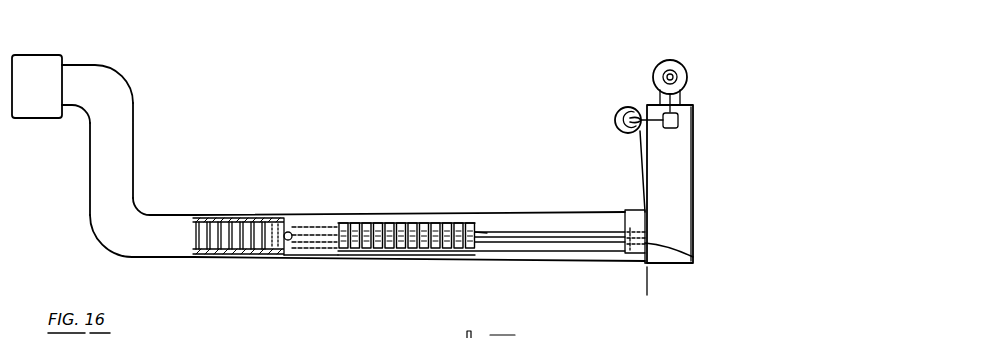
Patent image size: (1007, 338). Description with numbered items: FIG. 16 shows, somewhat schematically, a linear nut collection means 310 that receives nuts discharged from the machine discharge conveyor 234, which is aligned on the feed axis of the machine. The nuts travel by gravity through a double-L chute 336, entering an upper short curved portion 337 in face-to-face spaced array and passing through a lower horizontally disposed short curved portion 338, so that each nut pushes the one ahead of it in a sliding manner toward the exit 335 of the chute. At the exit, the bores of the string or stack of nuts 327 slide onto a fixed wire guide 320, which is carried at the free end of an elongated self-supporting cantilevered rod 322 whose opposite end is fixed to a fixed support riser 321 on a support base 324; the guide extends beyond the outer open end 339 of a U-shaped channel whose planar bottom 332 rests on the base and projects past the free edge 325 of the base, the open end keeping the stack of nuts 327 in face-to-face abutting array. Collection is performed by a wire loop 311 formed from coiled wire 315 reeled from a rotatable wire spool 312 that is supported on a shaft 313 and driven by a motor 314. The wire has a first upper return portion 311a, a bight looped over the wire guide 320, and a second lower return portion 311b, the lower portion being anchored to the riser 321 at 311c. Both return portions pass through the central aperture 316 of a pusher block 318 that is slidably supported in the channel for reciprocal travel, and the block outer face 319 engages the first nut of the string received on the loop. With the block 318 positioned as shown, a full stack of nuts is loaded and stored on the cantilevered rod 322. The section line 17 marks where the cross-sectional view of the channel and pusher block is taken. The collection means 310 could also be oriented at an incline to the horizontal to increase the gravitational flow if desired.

The machine discharge conveyor 234 is at (41, 47).
The upper short length curved portion 337 is at (100, 70).
The double-L chute means 336 is at (127, 142).
The lower horizontally disposed short curved portion 338 is at (153, 258).
The wire loop 311 is at (495, 228).
The wire loop first upper return portion 311a is at (520, 228).
The second lower return wire portion 311b is at (518, 240).
The wire loop anchor point 311c is at (693, 257).
The string or stack of nuts 327 is at (278, 222).
The exit of chute means 335 is at (293, 228).
The fixed wire guide 320 is at (292, 232).
The support base 324 is at (452, 251).
The free edge of base 325 is at (382, 251).
The outer open end of channel 339 is at (282, 258).
The planar bottom of channel 332 is at (340, 258).
The elongated self supporting rod 322 is at (487, 233).
The pusher block 318 is at (625, 211).
The block outer face 319 is at (625, 220).
The central aperture 316 is at (618, 232).
The fixed support riser 321 is at (693, 175).
The motor 314 is at (678, 70).
The rotatable wire spool 312 is at (627, 108).
The shaft 313 is at (627, 128).
The wire 315 is at (642, 160).
The linear nut collection means 310 is at (570, 103).
The section line 17- 17 is at (655, 195).